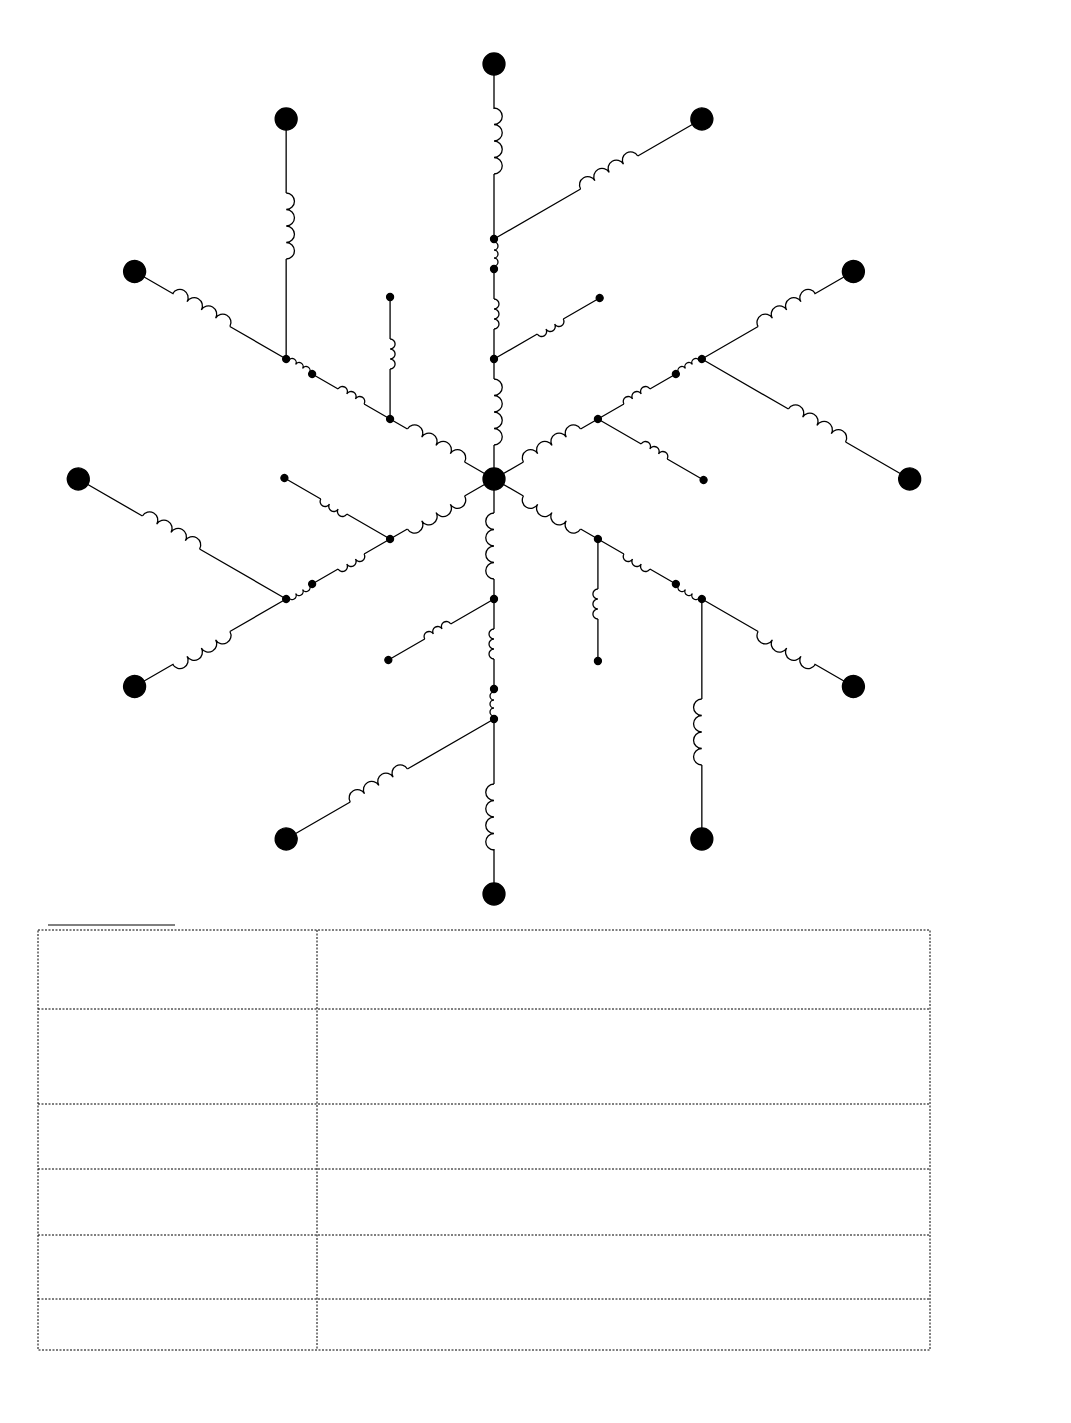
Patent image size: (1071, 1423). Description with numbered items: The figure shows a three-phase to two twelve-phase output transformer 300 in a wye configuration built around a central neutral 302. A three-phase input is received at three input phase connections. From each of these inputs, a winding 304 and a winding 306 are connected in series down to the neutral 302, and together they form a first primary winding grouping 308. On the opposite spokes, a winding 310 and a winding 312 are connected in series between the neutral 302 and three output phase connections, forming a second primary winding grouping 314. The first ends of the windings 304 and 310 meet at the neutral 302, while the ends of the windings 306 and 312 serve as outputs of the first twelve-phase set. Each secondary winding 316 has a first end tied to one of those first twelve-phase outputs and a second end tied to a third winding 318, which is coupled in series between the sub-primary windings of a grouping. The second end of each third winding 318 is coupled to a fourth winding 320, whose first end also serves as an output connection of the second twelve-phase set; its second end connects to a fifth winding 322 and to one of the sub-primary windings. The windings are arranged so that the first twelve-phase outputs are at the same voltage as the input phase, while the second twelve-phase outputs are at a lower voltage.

The three-phase to two twelve-phase output transformer 300 is at (620, 62).
The neutral 302 is at (510, 487).
The winding 304 is at (486, 400).
The winding 306 is at (487, 130).
The first primary winding grouping 308 is at (525, 403).
The winding 310 is at (410, 445).
The winding 312 is at (180, 328).
The second primary winding grouping 314 is at (490, 567).
The secondary winding 316 is at (271, 212).
The third winding 318 is at (482, 238).
The fourth winding 320 is at (352, 386).
The fifth winding 322 is at (407, 320).